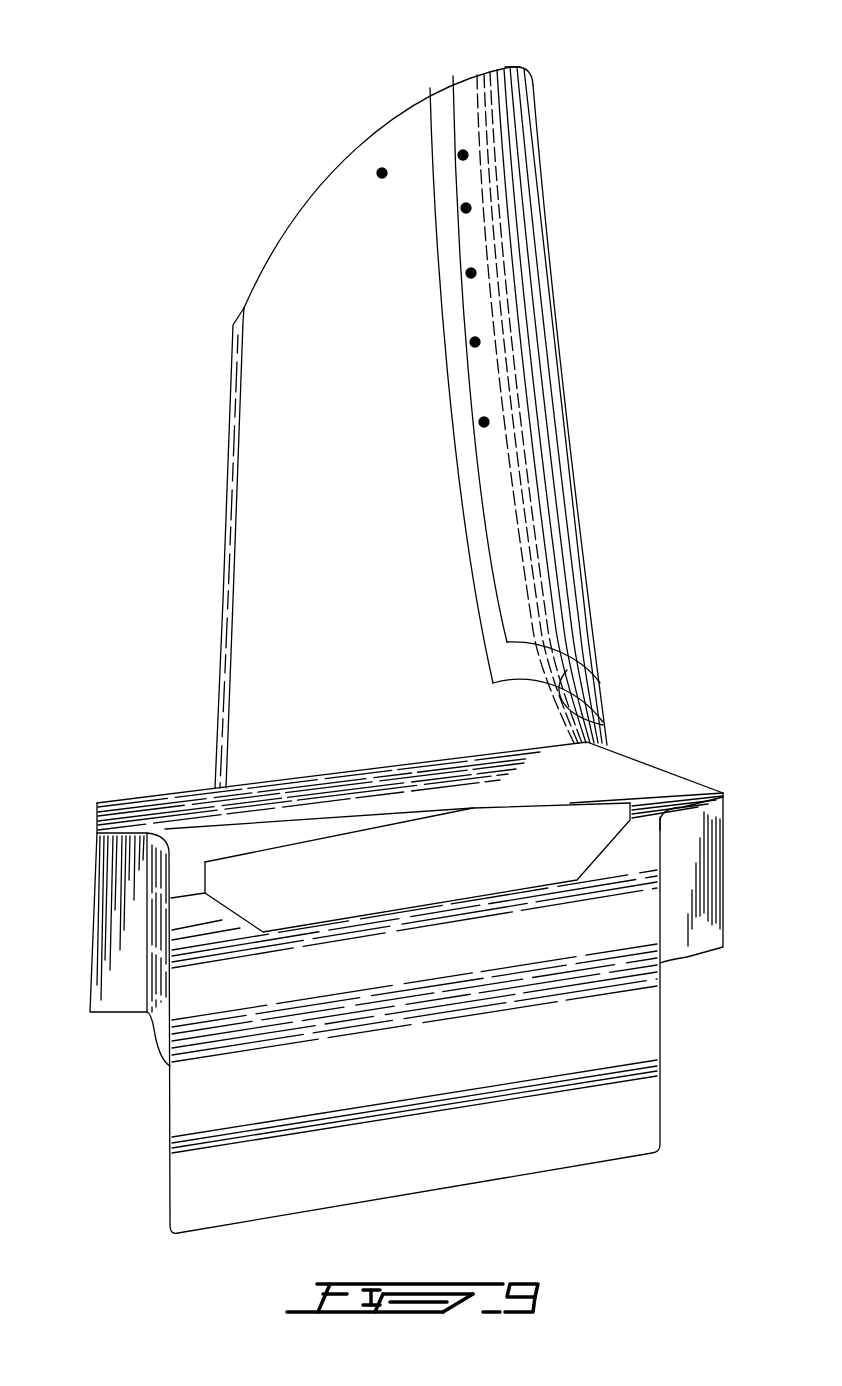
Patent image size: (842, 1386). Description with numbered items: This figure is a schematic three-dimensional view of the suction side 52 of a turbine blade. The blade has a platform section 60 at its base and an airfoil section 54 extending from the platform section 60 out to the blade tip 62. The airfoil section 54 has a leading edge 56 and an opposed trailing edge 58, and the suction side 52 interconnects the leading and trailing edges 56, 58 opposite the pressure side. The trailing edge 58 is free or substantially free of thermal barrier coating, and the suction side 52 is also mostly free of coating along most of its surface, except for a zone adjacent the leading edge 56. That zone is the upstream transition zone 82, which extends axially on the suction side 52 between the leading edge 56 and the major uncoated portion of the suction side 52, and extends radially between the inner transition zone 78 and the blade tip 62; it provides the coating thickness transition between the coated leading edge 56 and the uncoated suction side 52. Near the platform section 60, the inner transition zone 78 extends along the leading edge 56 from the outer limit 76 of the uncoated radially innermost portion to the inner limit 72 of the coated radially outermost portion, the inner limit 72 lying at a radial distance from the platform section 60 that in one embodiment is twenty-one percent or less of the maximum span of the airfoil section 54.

The suction side 52 is at (313, 283).
The airfoil section 54 is at (607, 358).
The leading edge 56 is at (515, 178).
The trailing edge 58 is at (224, 513).
The platform section 60 is at (123, 797).
The blade tip 62 is at (347, 150).
The inner limit 72 is at (583, 653).
The outer limit 76 is at (587, 693).
The inner transition zone 78 is at (580, 727).
The upstream transition zone 82 is at (442, 152).